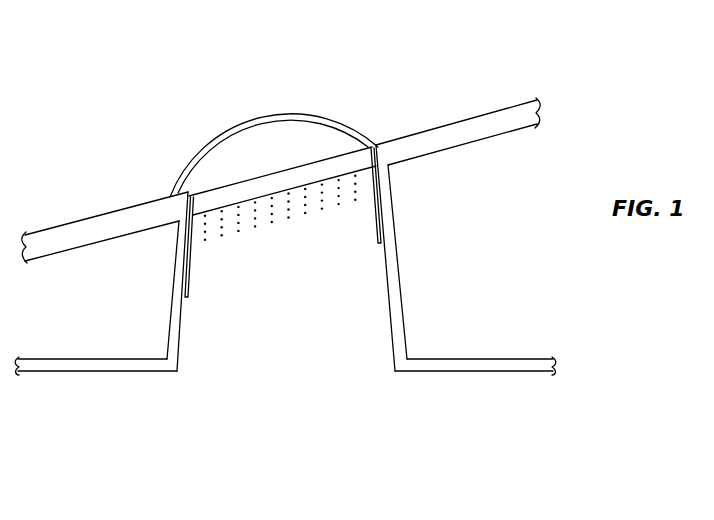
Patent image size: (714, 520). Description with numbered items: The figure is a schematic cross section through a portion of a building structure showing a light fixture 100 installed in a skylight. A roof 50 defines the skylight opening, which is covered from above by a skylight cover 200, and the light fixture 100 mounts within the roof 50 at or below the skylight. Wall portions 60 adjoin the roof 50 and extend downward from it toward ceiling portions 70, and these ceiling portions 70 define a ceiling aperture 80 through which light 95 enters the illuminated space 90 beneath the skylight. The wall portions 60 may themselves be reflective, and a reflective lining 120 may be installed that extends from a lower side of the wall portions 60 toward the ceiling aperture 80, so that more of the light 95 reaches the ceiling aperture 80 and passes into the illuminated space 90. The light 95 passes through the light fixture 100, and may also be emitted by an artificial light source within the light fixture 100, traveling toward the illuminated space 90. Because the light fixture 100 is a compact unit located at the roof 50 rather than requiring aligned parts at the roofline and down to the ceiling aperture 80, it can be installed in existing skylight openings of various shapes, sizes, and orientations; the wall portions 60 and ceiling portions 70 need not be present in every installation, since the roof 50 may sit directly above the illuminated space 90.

The roof 50 is at (85, 199).
The wall portions 60 is at (172, 281).
The ceiling portions 70 is at (82, 383).
The ceiling aperture 80 is at (297, 356).
The illuminated space 90 is at (309, 487).
The light 95 is at (357, 196).
The light fixture 100 is at (223, 197).
The reflective lining 120 is at (189, 282).
The skylight cover 200 is at (248, 130).